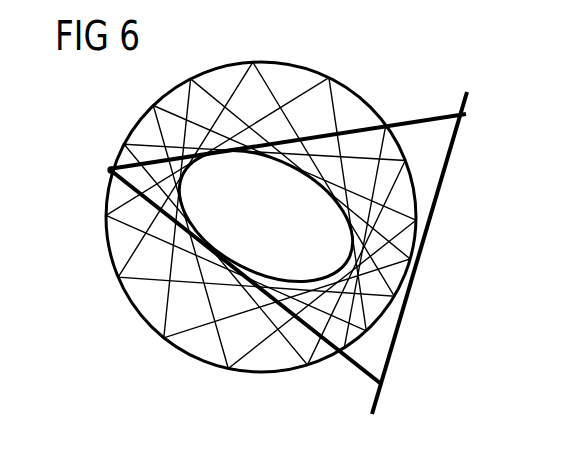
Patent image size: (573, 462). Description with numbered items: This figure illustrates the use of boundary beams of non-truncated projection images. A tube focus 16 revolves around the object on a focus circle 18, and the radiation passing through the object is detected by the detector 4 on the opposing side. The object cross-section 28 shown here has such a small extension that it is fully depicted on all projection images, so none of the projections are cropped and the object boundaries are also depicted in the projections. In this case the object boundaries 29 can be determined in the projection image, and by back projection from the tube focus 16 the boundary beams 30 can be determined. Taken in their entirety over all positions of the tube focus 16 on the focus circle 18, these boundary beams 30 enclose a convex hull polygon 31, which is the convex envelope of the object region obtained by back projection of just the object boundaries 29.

The detector 4 is at (450, 212).
The tube focus 16 is at (106, 171).
The focus circle 18 is at (304, 63).
The object cross-section 28 is at (244, 253).
The object boundaries 29 is at (468, 116).
The boundary beams 30 is at (416, 120).
The convex hull polygon 31 is at (184, 206).